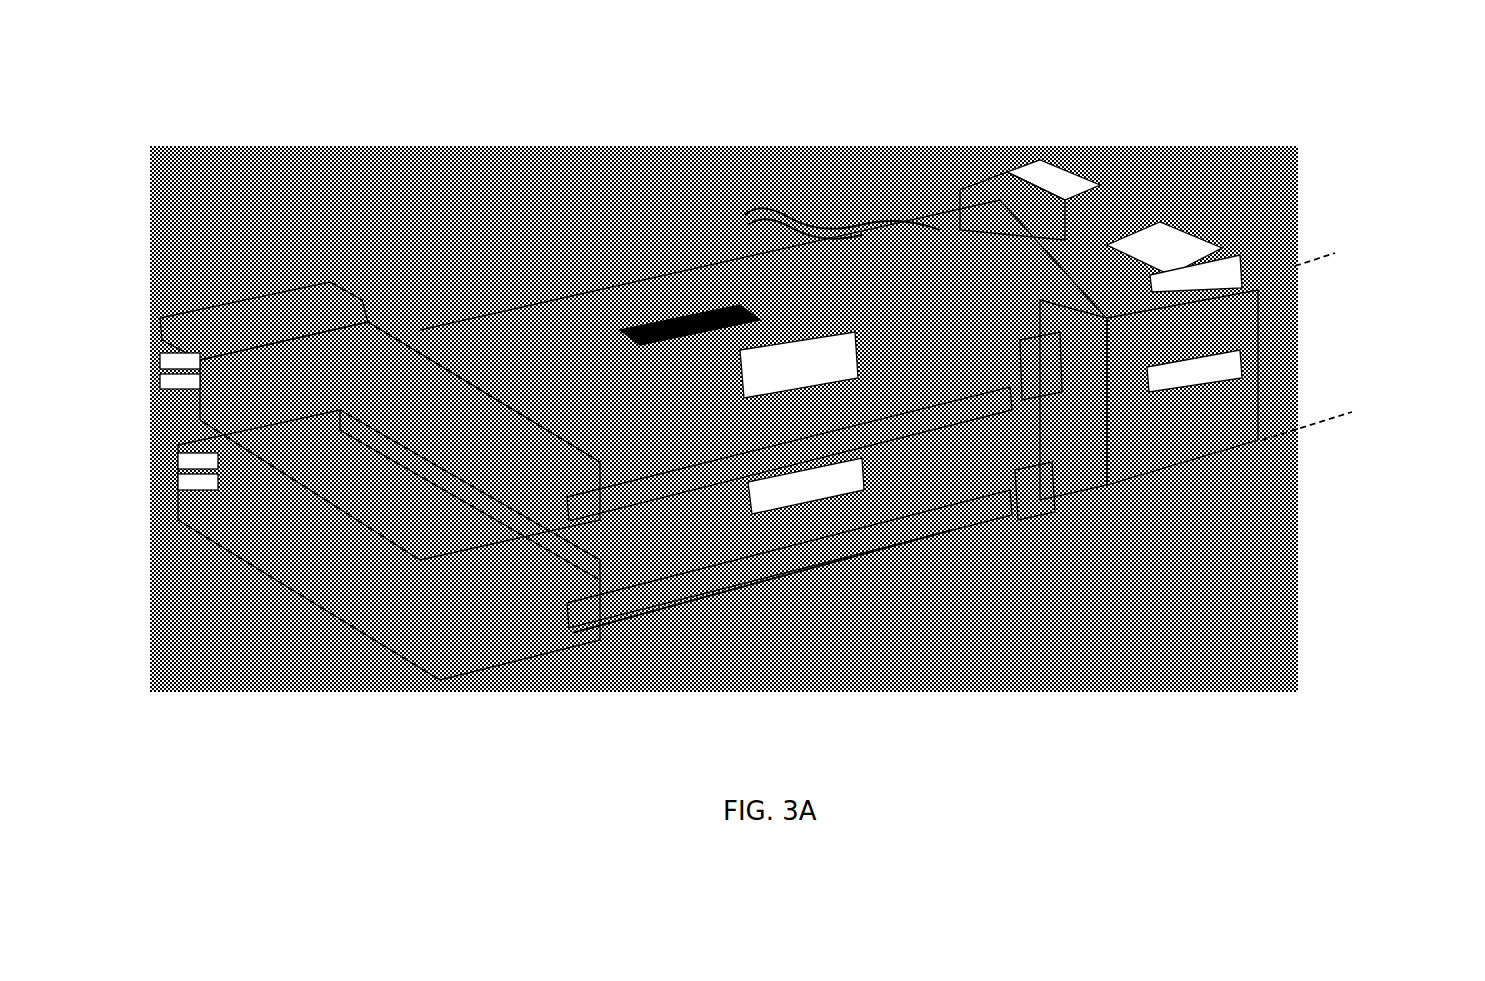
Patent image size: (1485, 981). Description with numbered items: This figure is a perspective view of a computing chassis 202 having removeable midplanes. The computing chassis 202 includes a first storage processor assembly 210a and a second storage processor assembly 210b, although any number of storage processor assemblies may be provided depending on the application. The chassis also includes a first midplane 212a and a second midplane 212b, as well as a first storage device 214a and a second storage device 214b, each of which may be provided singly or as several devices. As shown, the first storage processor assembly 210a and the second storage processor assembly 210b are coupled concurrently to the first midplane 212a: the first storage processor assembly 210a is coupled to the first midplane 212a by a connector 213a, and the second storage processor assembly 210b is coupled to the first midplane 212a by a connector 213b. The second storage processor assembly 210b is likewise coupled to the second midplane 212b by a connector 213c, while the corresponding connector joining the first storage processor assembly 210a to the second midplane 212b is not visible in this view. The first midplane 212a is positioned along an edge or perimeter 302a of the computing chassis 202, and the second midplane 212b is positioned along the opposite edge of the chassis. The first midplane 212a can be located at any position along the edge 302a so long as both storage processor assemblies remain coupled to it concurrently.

The computing chassis 202 is at (1176, 88).
The first storage processor assembly 210a is at (862, 580).
The second storage processor assembly 210b is at (615, 212).
The first midplane 212a is at (1103, 317).
The second midplane 212b is at (833, 172).
The connector 213a is at (1047, 497).
The connector 213b is at (1056, 368).
The connector 213c is at (783, 216).
The first storage device 214a is at (487, 671).
The second storage device 214b is at (232, 271).
The edge 302a is at (1356, 314).